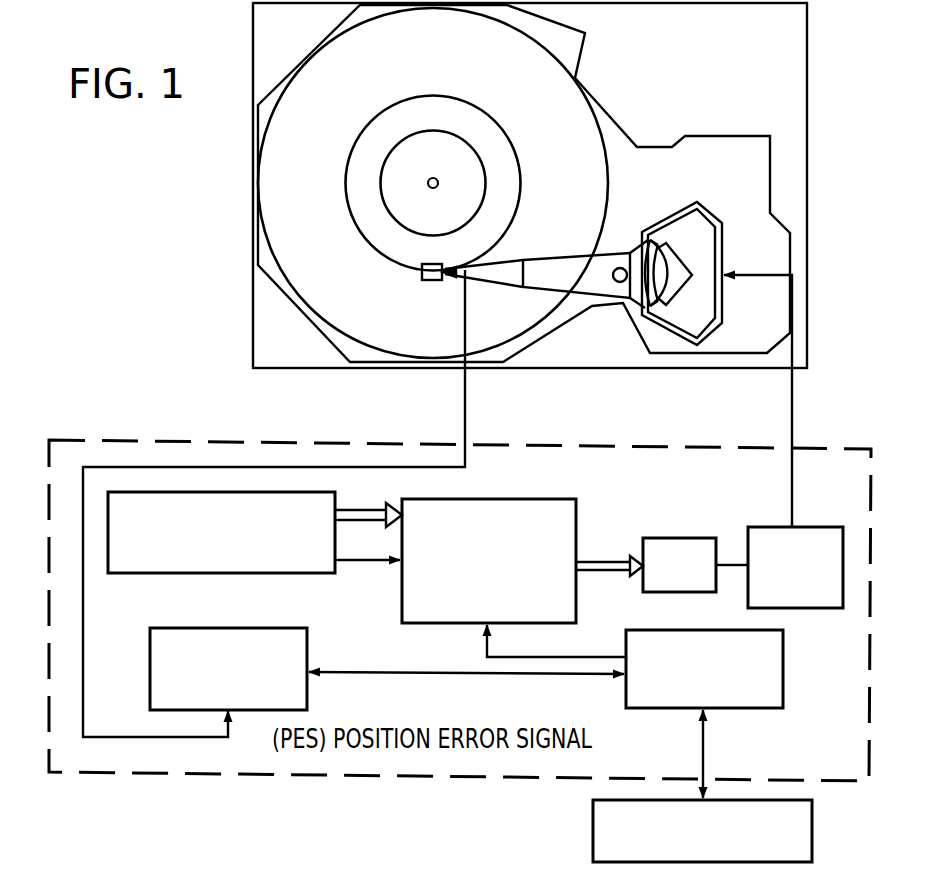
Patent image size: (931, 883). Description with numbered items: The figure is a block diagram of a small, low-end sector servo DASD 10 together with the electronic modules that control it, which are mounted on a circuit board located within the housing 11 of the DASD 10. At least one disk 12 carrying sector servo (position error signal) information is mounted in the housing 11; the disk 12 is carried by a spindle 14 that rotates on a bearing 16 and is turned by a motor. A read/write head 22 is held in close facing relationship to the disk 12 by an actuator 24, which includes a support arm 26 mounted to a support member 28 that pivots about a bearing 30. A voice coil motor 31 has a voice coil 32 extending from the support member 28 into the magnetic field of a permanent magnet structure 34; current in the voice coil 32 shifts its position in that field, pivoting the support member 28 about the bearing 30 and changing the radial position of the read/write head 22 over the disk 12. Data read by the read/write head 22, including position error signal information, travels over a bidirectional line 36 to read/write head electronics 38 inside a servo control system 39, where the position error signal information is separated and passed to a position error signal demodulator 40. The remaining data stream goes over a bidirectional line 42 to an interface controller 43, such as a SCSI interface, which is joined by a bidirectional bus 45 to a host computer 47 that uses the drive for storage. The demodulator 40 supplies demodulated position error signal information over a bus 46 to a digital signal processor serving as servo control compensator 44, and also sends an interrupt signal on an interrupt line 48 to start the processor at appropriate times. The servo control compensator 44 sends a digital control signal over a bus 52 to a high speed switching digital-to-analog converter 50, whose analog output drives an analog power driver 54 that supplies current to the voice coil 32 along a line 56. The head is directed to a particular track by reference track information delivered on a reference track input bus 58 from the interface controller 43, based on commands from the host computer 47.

The sector servo DASD 10 is at (235, 177).
The housing 11 is at (778, 83).
The disk 12 is at (443, 65).
The spindle 14 is at (441, 225).
The bearing 16 is at (437, 179).
The read/write head 22 is at (420, 280).
The actuator 24 is at (611, 248).
The support arm 26 is at (500, 270).
The support member 28 is at (548, 279).
The bearing 30 is at (620, 283).
The voice coil motor 31 is at (661, 214).
The voice coil 32 is at (692, 297).
The permanent magnet structure 34 is at (720, 237).
The line 36 is at (466, 437).
The read/write head electronics 38 is at (163, 653).
The servo control system 39 is at (180, 437).
The position error signal demodulator 40 is at (177, 563).
The line 42 is at (512, 675).
The interface controller 43 is at (770, 678).
The servo control compensator 44 is at (473, 510).
The bidirectional bus 45 is at (706, 755).
The bus 46 is at (385, 520).
The host computer 47 is at (603, 838).
The interrupt line 48 is at (380, 567).
The digital-to-analog converter 50 is at (673, 540).
The bus 52 is at (617, 572).
The analog power driver 54 is at (805, 530).
The line 56 is at (792, 416).
The reference track input bus 58 is at (550, 660).